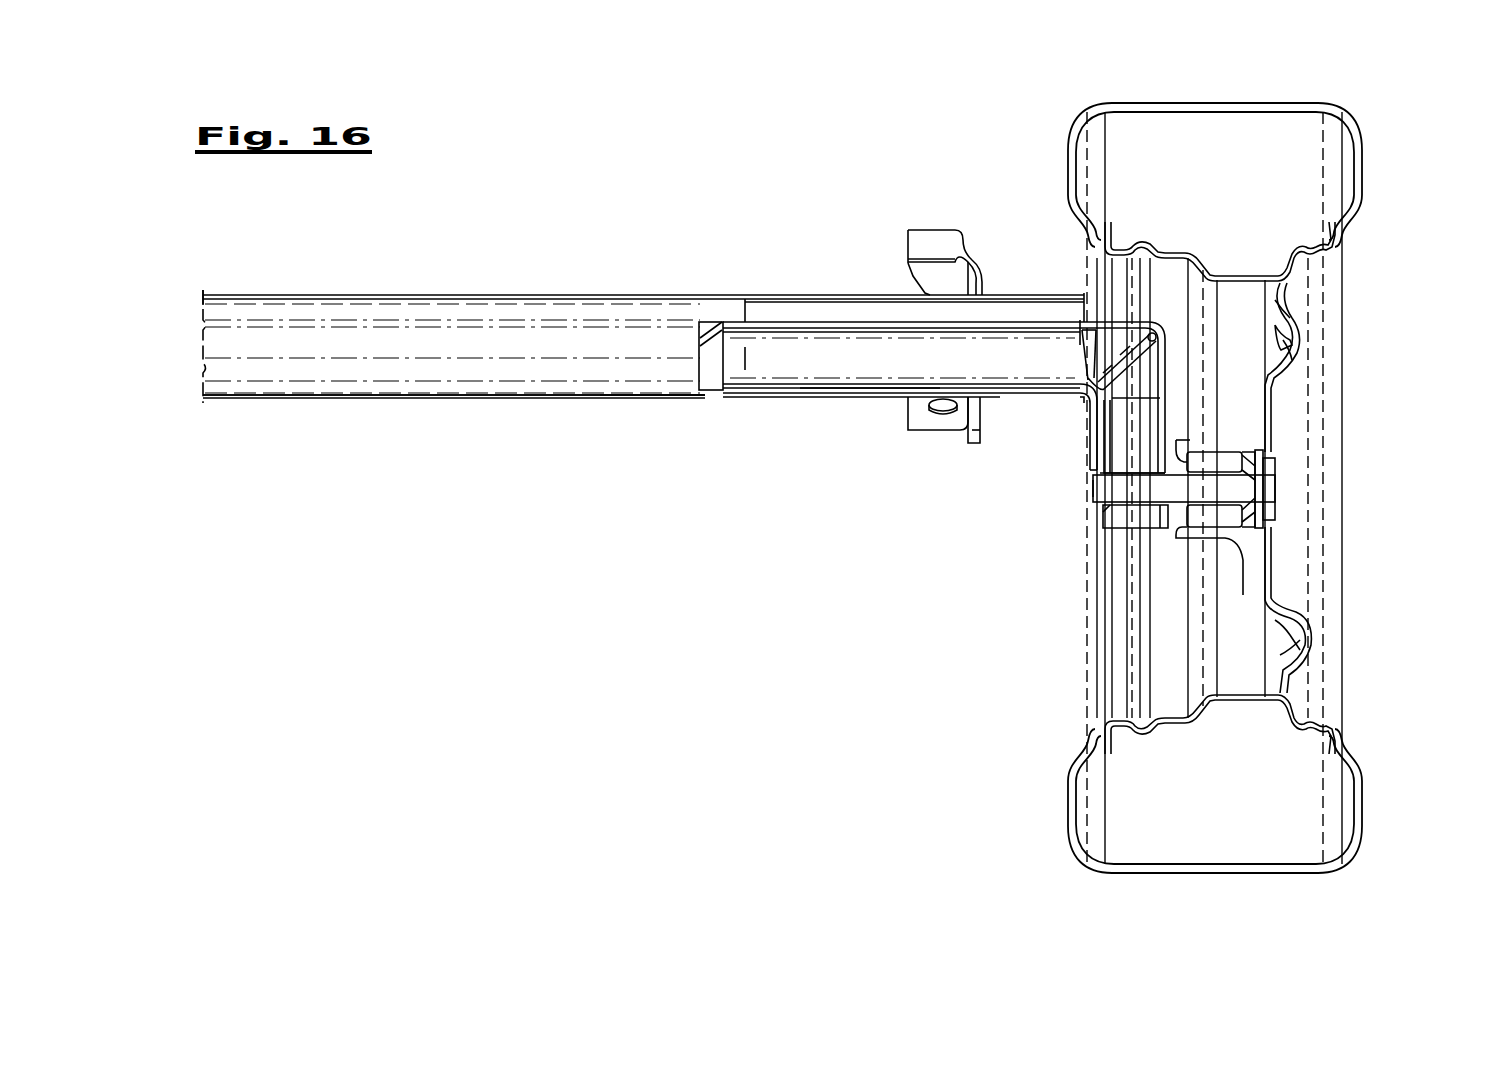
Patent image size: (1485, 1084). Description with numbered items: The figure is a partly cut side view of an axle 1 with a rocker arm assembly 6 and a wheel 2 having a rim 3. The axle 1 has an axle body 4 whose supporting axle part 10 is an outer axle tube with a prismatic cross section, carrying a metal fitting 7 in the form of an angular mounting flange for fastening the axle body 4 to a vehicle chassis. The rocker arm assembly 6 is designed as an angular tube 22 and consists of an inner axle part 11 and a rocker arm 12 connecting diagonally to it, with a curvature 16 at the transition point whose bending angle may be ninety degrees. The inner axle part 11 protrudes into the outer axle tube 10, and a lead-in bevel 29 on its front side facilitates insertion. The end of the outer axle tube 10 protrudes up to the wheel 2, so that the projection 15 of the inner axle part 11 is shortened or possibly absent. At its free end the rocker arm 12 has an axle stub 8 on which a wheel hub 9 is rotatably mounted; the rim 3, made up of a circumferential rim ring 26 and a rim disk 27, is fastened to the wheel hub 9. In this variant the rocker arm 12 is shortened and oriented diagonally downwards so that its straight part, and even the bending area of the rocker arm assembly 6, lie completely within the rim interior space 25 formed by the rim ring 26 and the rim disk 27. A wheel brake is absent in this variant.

The axle 1 is at (545, 247).
The wheel 2 is at (1355, 258).
The rim 3 is at (1283, 722).
The axle body 4 is at (408, 307).
The rocker arm assembly 6 is at (1083, 407).
The metal fitting 7 is at (932, 233).
The axle stub 8 is at (1150, 490).
The wheel hub 9 is at (1235, 540).
The supporting axle part 10 is at (655, 398).
The inner axle part 11 is at (828, 352).
The rocker arm 12 is at (1128, 432).
The projection 15 is at (1088, 305).
The curvature 16 is at (1165, 341).
The angular tube 22 is at (868, 393).
The rim interior space 25 is at (1183, 600).
The rim ring 26 is at (1185, 275).
The rim disk 27 is at (1320, 337).
The lead-in bevel 29 is at (712, 343).